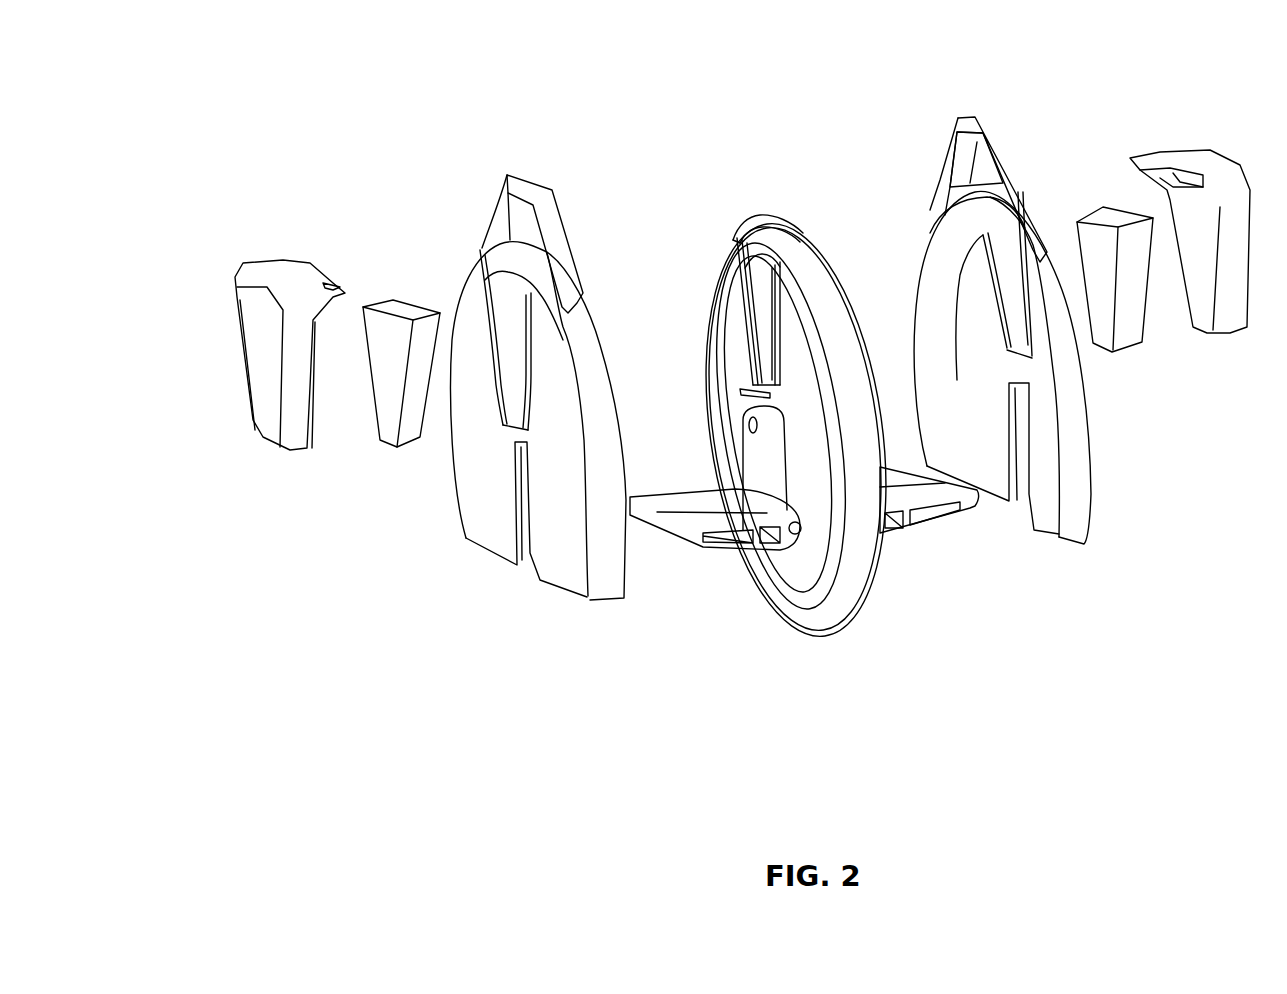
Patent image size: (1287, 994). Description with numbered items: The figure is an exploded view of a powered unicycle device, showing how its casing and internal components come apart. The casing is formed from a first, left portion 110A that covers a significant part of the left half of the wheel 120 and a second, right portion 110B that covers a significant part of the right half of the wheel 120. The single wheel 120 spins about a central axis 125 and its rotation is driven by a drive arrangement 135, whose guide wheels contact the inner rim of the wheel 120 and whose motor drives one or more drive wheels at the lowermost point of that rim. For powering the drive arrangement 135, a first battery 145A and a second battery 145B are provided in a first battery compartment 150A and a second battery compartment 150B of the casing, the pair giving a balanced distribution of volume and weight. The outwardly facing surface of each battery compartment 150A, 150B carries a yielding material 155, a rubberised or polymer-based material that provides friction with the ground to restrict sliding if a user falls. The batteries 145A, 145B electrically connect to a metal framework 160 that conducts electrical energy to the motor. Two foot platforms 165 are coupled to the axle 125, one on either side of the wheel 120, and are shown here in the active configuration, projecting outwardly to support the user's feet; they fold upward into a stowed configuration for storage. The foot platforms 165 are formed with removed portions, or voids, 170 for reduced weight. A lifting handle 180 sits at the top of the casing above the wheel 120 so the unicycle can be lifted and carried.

The first, left portion of the casing 110A is at (457, 487).
The second, right portion of the casing 110B is at (1090, 507).
The wheel 120 is at (797, 630).
The central axis 125 is at (753, 430).
The drive arrangement 135 is at (877, 63).
The first battery 145A is at (420, 300).
The second battery 145B is at (1142, 344).
The first battery compartment 150A is at (304, 262).
The second battery compartment 150B is at (1190, 148).
The yielding material 155 is at (250, 375).
The metal framework 160 is at (760, 218).
The foot platforms 165 is at (697, 547).
The removed portions (voids) 170 is at (898, 540).
The lifting handle 180 is at (1000, 130).